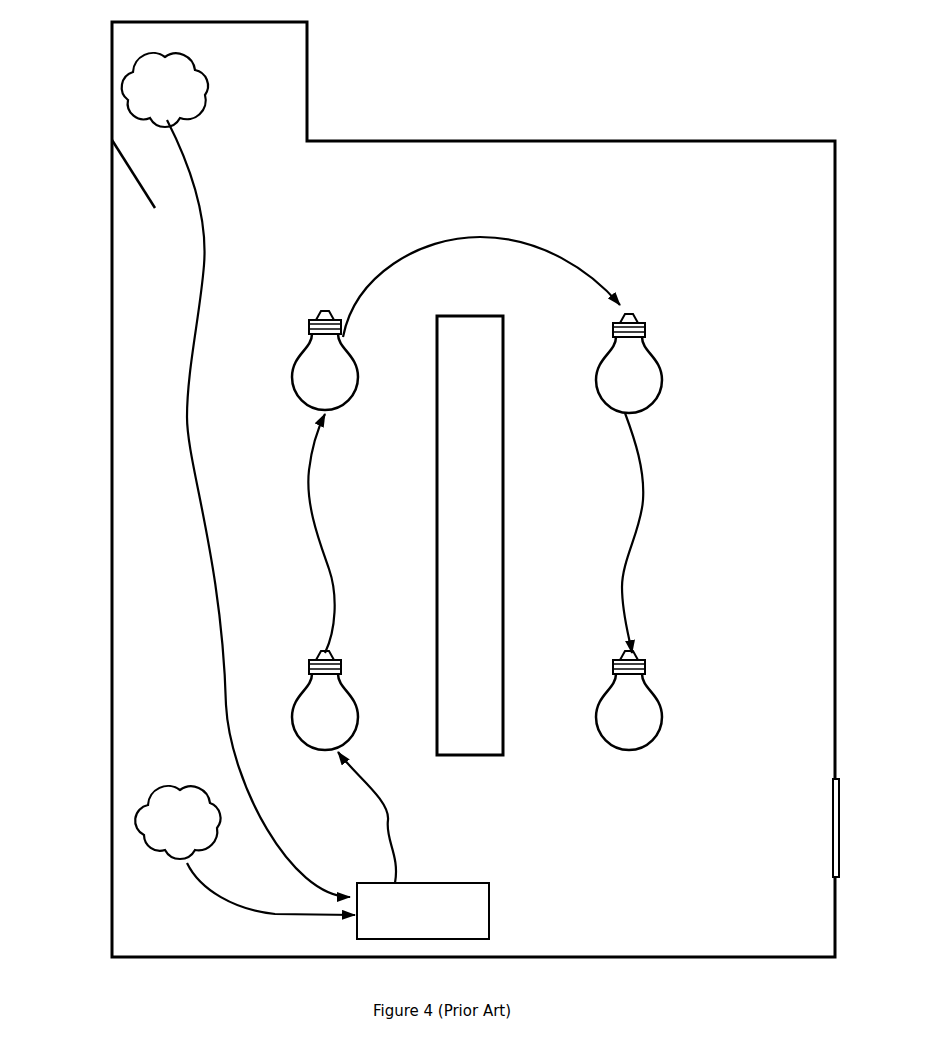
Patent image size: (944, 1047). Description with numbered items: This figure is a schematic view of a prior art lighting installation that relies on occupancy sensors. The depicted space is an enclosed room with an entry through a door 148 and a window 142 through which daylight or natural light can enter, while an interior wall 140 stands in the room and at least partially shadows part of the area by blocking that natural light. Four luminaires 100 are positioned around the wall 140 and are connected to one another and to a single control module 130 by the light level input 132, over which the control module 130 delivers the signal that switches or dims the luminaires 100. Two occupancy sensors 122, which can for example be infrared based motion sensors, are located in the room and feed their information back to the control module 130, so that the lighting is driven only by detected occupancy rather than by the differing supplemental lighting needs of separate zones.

The luminaire 100 is at (338, 387).
The occupancy sensor 122 is at (167, 88).
The control module 130 is at (463, 918).
The light level input 132 is at (416, 249).
The wall 140 is at (483, 509).
The window 142 is at (830, 836).
The door 148 is at (133, 183).